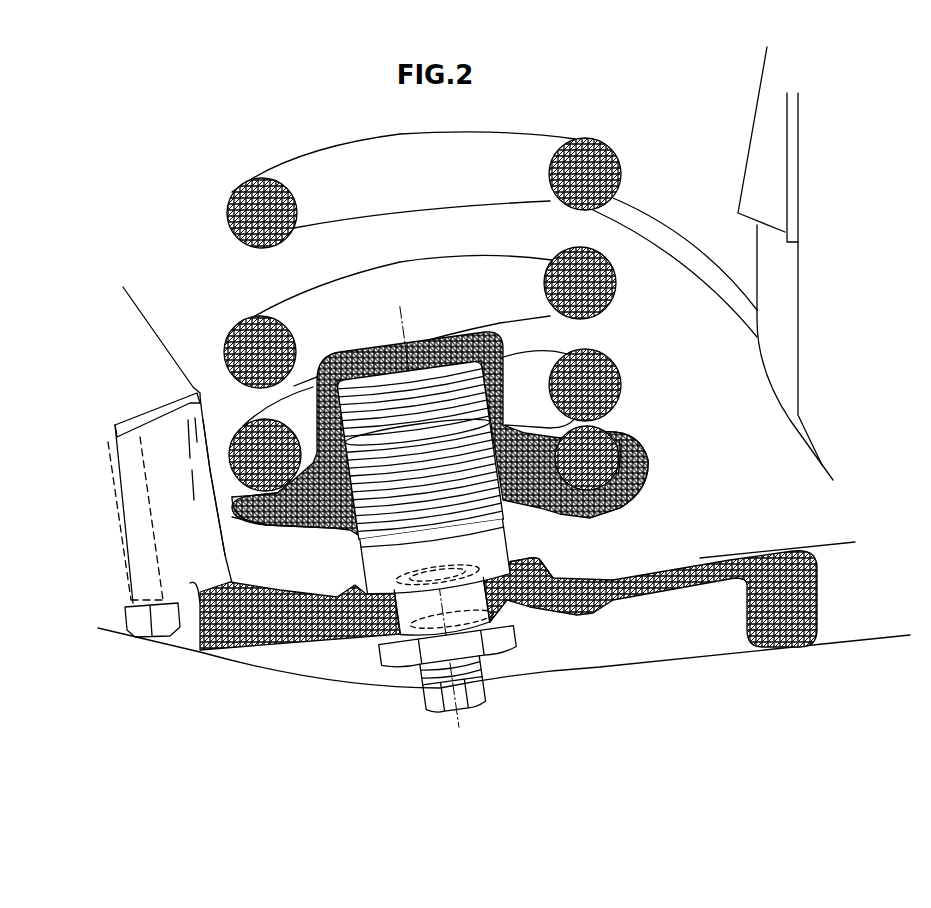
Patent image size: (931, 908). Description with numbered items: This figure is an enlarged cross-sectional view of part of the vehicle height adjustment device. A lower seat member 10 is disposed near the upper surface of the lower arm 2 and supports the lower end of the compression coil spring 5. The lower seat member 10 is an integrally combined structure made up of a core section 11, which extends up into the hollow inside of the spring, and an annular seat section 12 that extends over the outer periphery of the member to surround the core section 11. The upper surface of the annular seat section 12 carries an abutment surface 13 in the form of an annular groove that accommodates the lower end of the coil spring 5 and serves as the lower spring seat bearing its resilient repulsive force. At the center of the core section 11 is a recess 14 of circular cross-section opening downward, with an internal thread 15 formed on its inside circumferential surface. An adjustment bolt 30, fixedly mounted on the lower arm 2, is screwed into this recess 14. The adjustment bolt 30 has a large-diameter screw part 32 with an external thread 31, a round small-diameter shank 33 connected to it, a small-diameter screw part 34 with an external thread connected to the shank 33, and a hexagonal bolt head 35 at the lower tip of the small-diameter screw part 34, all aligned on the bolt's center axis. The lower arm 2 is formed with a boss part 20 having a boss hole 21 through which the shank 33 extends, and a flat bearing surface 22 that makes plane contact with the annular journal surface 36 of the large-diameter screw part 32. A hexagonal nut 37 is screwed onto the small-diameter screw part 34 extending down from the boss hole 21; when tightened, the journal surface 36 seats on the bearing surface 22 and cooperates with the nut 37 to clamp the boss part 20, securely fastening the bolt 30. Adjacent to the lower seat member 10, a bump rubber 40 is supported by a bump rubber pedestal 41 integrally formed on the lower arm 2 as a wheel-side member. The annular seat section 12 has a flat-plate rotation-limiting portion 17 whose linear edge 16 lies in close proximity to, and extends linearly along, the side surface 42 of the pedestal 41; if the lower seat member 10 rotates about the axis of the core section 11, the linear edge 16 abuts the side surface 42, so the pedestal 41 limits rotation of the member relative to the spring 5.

The lower arm 2 is at (777, 613).
The compression coil spring 5 is at (228, 226).
The lower seat member 10 is at (648, 462).
The core section 11 is at (545, 348).
The annular seat section 12 is at (643, 480).
The abutment surface 13 is at (590, 470).
The recess 14 is at (363, 383).
The internal thread 15 is at (432, 383).
The linear edge 16 is at (223, 503).
The rotation-limiting portion 17 is at (233, 497).
The boss part 20 is at (547, 563).
The boss hole 21 is at (490, 592).
The bearing surface 22 is at (537, 555).
The adjustment bolt 30 is at (463, 726).
The external thread 31 is at (360, 537).
The large-diameter screw part 32 is at (353, 580).
The shank 33 is at (473, 600).
The small-diameter screw part 34 is at (490, 678).
The bolt head 35 is at (483, 697).
The journal surface 36 is at (512, 565).
The hexagonal nut 37 is at (403, 668).
The bump rubber 40 is at (152, 313).
The bump rubber pedestal 41 is at (203, 537).
The side surface 42 is at (213, 432).